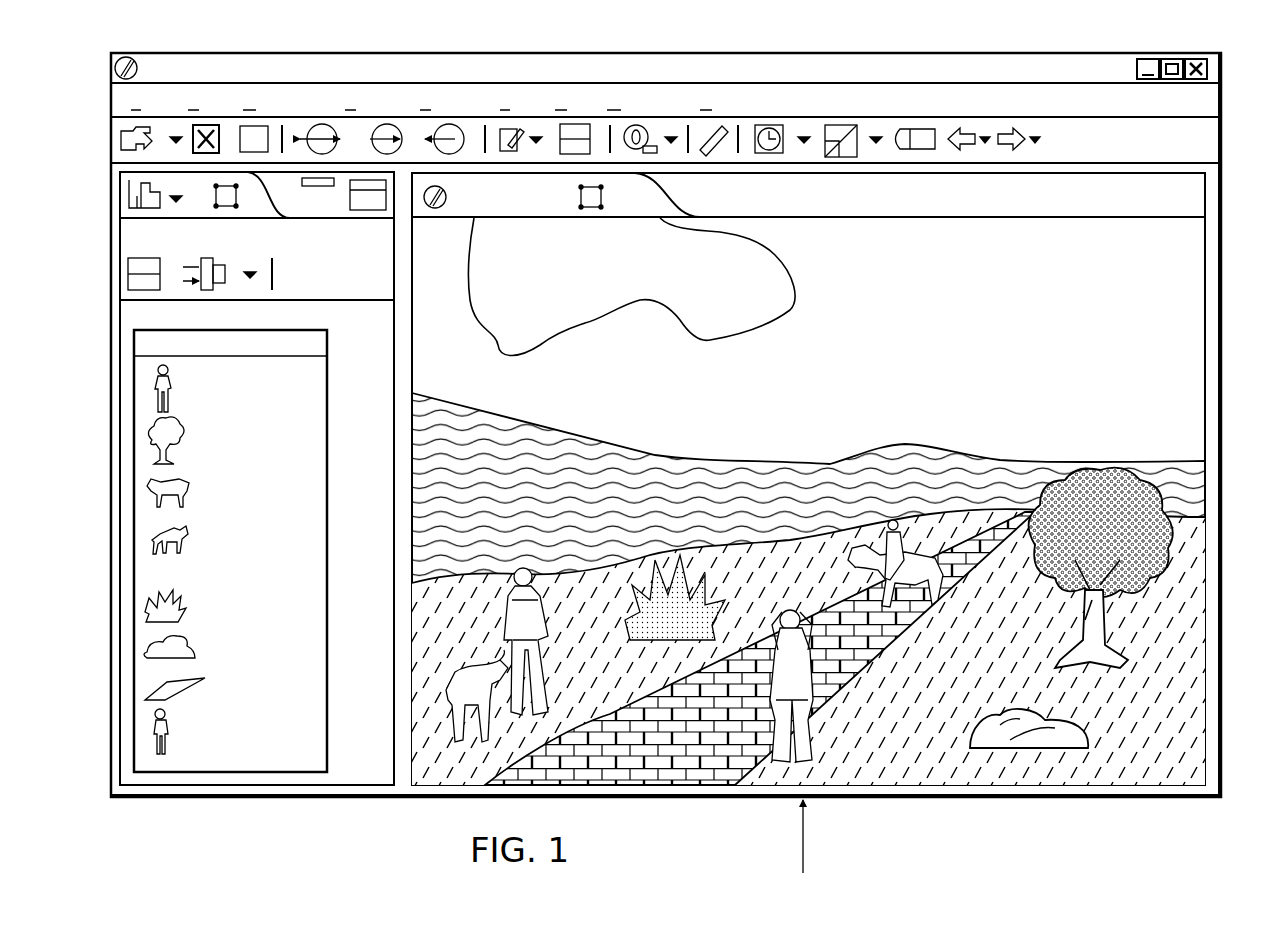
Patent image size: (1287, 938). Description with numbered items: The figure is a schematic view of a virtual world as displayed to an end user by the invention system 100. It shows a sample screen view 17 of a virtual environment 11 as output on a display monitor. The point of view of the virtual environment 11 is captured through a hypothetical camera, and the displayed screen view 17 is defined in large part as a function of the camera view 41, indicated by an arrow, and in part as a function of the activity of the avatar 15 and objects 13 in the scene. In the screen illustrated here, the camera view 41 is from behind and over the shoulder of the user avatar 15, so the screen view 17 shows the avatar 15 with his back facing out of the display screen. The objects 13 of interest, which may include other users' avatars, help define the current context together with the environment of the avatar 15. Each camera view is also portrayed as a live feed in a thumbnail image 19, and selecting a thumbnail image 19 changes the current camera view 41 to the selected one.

The invention system 100 is at (563, 42).
The screen view 17 is at (1222, 67).
The thumbnail image 19 is at (327, 548).
The virtual environment 11 is at (1097, 787).
The object 13 is at (520, 735).
The avatar 15 is at (788, 622).
The camera view 41 is at (904, 836).